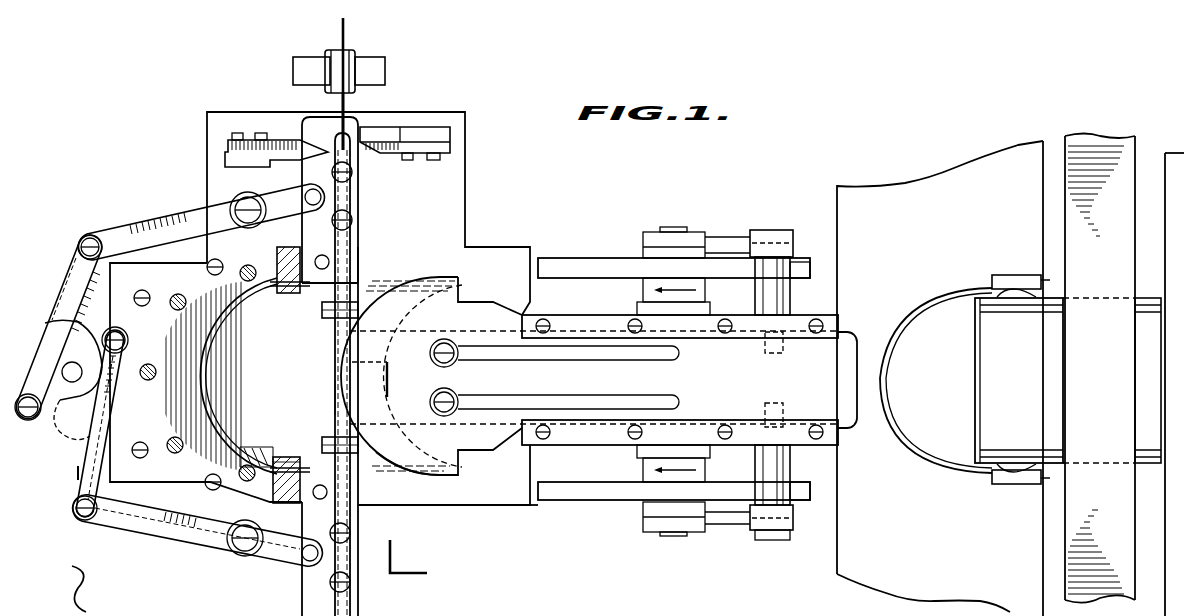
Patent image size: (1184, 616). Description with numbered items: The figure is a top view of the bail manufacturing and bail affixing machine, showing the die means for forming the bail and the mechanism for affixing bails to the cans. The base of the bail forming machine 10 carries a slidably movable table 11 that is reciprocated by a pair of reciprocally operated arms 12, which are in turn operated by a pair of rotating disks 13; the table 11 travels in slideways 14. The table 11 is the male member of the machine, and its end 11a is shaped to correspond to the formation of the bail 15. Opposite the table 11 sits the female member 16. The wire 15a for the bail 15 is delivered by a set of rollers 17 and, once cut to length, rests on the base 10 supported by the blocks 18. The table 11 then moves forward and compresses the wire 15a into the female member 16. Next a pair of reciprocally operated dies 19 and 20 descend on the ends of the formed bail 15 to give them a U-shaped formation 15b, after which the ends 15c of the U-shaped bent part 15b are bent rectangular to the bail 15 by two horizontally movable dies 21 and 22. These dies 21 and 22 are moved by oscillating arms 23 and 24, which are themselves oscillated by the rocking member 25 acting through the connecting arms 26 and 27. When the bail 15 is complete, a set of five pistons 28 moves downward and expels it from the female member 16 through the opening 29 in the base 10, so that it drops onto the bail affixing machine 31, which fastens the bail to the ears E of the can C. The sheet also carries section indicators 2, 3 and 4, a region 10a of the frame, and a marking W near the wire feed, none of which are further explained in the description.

The section line 2- 2 is at (24, 390).
The section line 3- 3 is at (400, 25).
The section line 4- 4 is at (163, 207).
The base of the bail forming machine 10 is at (516, 254).
The machine frame portion 10a is at (1000, 187).
The slidably movable table 11 is at (469, 310).
The end of the table 11a is at (388, 460).
The reciprocally operated arms 12 is at (717, 240).
The rotating disks 13 is at (573, 263).
The slideways 14 is at (570, 314).
The bail 15 is at (205, 292).
The wire 15a is at (337, 398).
The U-shaped formation 15b is at (286, 250).
The ends of the U-shaped bent part 15c is at (320, 312).
The female member 16 is at (206, 380).
The set of rollers 17 is at (356, 90).
The blocks 18 is at (322, 317).
The reciprocally operated die 19 is at (273, 462).
The reciprocally operated die 20 is at (270, 294).
The horizontally movable die 21 is at (303, 608).
The horizontally movable die 22 is at (318, 118).
The oscillating arm 23 is at (128, 528).
The oscillating arm 24 is at (127, 232).
The rocking member 25 is at (42, 416).
The connecting arm 26 is at (83, 482).
The connecting arm 27 is at (68, 275).
The pistons 28 is at (157, 370).
The opening 29 is at (165, 402).
The bail affixing machine 31 is at (541, 504).
The work spool W is at (346, 52).
The can C is at (1068, 380).
The ears E is at (1046, 290).